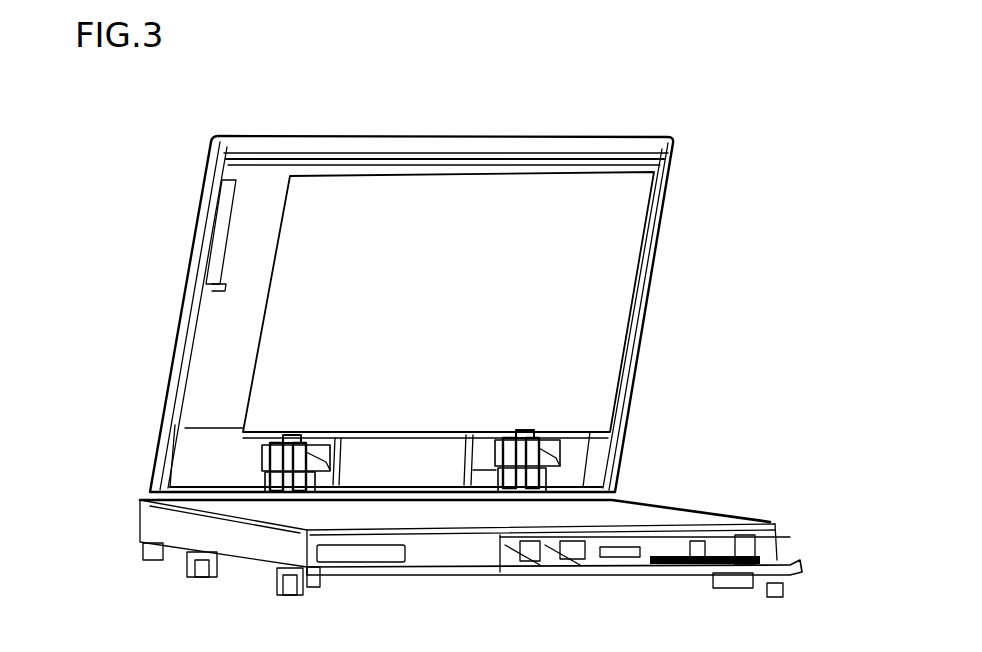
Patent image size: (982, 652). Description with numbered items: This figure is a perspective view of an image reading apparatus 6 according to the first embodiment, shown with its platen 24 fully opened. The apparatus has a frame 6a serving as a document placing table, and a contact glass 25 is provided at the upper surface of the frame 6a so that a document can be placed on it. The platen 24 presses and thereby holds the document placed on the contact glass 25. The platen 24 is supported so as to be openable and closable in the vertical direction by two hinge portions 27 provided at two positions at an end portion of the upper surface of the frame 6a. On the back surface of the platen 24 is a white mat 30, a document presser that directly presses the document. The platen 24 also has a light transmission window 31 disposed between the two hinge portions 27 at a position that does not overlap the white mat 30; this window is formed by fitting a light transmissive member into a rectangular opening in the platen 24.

The image reading apparatus 6 is at (737, 374).
The frame 6a is at (153, 532).
The platen 24 is at (181, 322).
The contact glass 25 is at (643, 512).
The hinge portions 27 is at (258, 480).
The white mat 30 is at (617, 283).
The light transmission window 31 is at (413, 460).